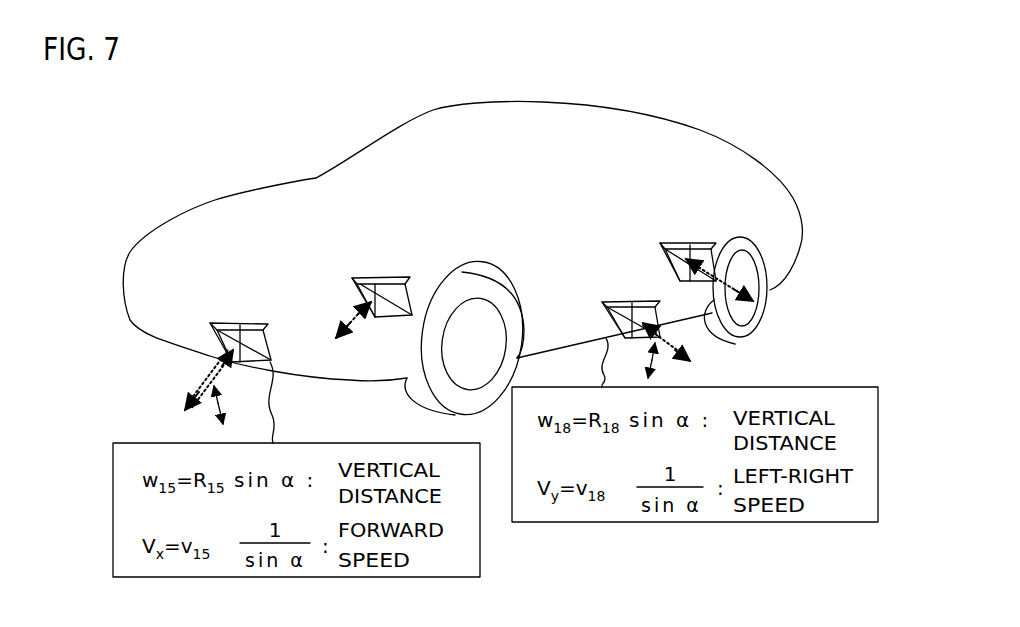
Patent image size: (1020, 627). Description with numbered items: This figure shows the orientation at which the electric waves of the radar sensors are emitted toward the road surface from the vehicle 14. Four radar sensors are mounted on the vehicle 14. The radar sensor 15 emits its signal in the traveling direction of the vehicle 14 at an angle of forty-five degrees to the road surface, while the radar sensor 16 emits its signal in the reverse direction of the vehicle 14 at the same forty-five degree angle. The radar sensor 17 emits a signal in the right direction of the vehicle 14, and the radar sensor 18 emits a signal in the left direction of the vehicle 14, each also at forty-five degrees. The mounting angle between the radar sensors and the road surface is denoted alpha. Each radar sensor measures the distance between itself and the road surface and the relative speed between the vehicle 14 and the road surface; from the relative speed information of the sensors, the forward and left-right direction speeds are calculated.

The vehicle 14 is at (563, 113).
The radar sensor 15 is at (240, 323).
The radar sensor 16 is at (697, 243).
The radar sensor 17 is at (374, 278).
The radar sensor 18 is at (626, 302).